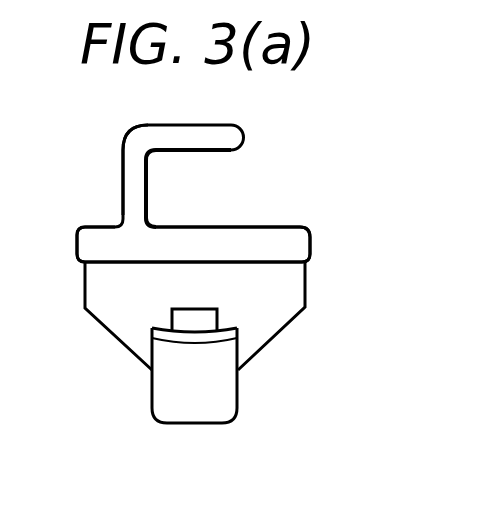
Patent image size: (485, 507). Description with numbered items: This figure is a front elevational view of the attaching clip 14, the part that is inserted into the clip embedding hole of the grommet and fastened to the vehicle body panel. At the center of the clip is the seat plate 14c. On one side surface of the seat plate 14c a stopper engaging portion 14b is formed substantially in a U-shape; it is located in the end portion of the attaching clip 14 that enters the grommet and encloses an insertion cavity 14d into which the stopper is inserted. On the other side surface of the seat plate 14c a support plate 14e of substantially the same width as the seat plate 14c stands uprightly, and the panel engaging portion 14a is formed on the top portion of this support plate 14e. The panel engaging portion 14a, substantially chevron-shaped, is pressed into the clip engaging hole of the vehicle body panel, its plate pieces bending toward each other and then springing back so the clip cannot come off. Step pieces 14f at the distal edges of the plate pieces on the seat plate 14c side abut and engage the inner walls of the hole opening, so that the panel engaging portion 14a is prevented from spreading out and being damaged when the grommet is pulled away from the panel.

The attaching clip 14 is at (318, 209).
The panel engaging portion 14a is at (238, 394).
The stopper engaging portion 14b is at (122, 167).
The seat plate 14c is at (312, 243).
The insertion cavity 14d is at (160, 190).
The support plate 14e is at (305, 295).
The step pieces 14f is at (172, 315).